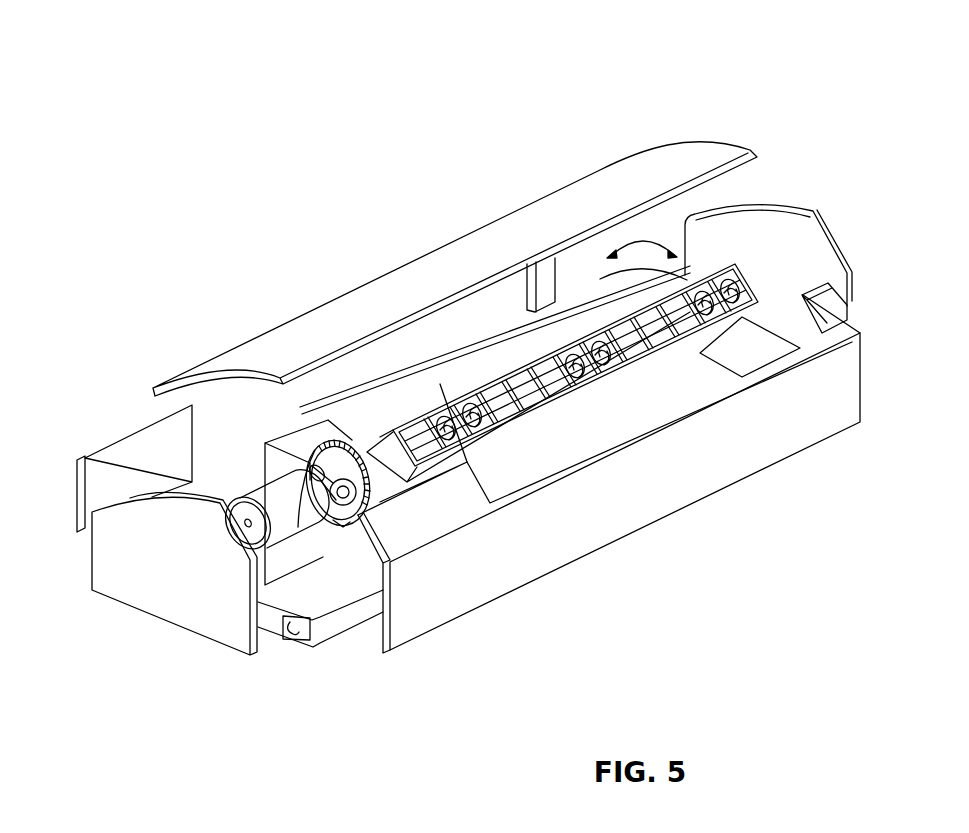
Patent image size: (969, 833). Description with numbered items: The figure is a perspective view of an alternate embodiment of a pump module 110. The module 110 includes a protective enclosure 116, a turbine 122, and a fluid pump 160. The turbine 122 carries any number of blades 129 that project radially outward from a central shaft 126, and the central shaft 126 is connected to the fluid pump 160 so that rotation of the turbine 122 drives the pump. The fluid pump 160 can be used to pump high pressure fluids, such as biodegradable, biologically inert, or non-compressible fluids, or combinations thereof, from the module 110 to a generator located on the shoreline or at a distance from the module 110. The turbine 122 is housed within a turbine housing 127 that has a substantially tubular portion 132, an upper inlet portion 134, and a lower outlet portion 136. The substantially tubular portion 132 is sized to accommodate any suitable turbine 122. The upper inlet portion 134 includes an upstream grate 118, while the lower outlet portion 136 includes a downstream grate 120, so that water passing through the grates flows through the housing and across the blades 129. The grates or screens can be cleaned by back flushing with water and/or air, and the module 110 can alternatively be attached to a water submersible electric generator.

The module 110 is at (683, 57).
The protective enclosure 116 is at (592, 170).
The upstream grate 118 is at (740, 285).
The downstream grate 120 is at (263, 444).
The turbine 122 is at (283, 517).
The central shaft 126 is at (343, 512).
The turbine housing 127 is at (355, 432).
The blades 129 is at (323, 438).
The substantially tubular portion 132 is at (440, 384).
The upper inlet portion 134 is at (493, 378).
The lower outlet portion 136 is at (263, 463).
The fluid pump 160 is at (285, 634).